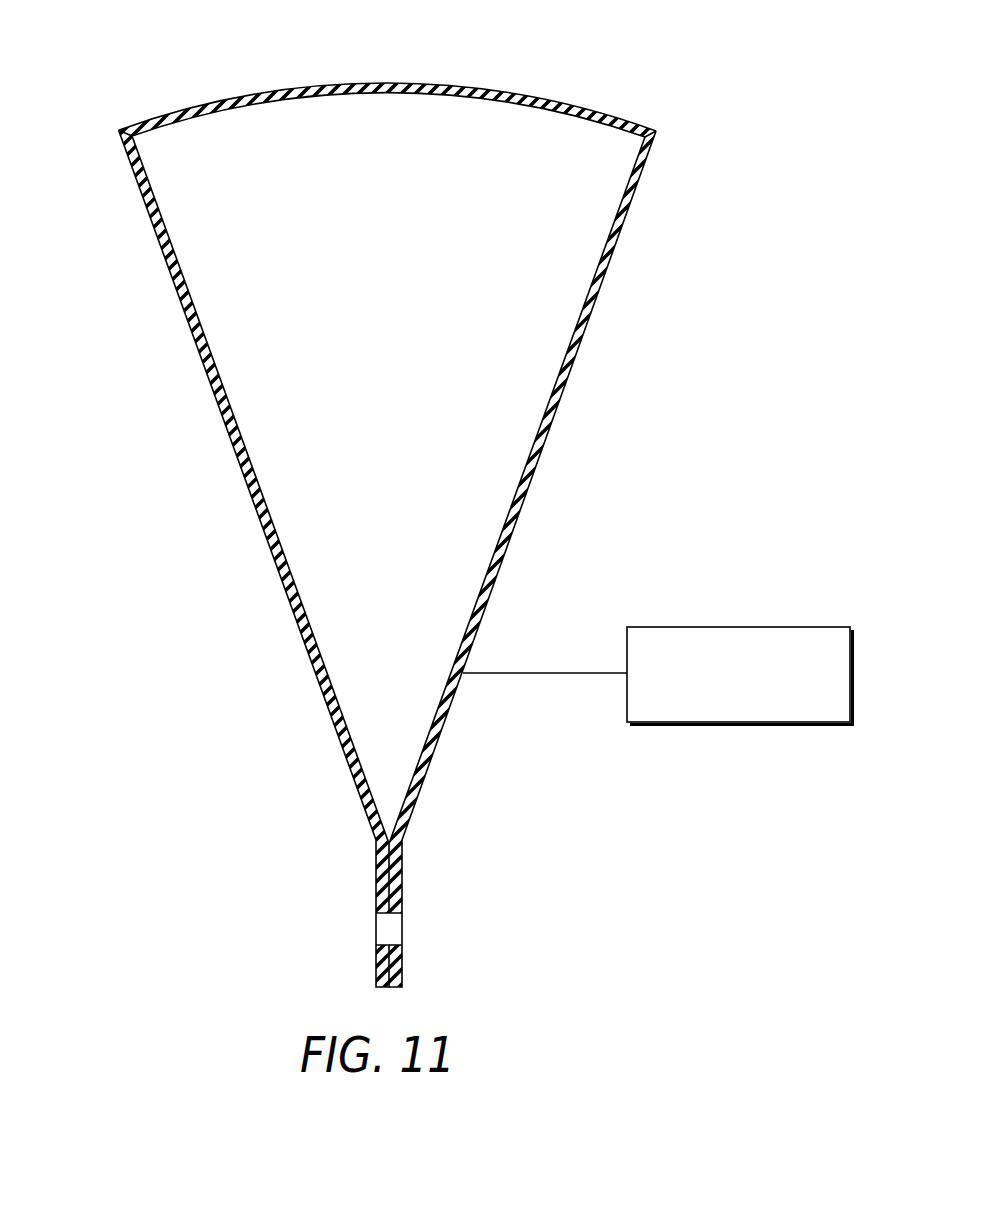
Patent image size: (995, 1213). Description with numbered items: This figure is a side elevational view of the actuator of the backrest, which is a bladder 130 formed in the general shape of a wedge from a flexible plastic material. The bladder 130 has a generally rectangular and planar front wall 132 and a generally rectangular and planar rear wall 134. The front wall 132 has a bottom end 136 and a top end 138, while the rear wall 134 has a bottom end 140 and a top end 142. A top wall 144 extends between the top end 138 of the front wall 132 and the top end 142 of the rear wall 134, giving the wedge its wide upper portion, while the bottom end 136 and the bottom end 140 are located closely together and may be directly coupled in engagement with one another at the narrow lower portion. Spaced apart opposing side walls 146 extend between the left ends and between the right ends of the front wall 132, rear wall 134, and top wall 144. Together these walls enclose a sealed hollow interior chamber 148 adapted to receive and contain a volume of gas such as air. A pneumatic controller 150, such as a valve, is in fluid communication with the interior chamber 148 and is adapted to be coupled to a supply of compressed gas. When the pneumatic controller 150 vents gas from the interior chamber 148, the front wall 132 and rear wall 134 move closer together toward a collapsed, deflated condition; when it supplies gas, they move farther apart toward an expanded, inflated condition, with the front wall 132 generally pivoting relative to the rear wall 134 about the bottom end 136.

The bladder 130 is at (676, 79).
The front wall 132 is at (237, 453).
The rear wall 134 is at (552, 395).
The bottom end of front wall 136 is at (374, 836).
The top end of front wall 138 is at (125, 150).
The bottom end of rear wall 140 is at (412, 818).
The top end of rear wall 142 is at (650, 163).
The top wall 144 is at (362, 80).
The side walls 146 is at (233, 303).
The interior chamber 148 is at (542, 293).
The pneumatic controller 150 is at (779, 627).